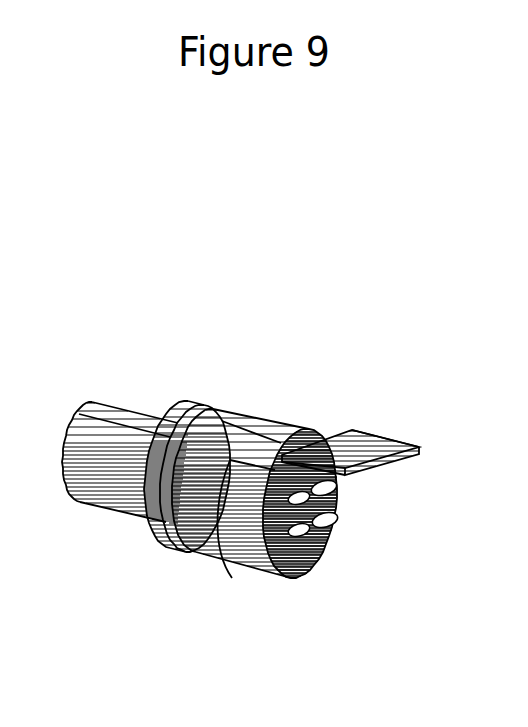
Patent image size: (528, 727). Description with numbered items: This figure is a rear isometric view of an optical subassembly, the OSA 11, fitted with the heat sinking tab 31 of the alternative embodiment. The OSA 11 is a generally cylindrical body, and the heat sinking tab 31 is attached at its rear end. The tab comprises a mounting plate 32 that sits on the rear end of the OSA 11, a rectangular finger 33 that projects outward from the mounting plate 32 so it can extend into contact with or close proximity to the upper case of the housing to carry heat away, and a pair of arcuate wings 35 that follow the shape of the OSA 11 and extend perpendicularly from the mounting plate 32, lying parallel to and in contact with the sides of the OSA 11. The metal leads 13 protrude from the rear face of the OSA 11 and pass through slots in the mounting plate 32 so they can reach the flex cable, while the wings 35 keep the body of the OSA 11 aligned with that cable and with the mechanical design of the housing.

The OSA 11 is at (172, 418).
The metal leads 13 is at (333, 518).
The heat sinking tab 31 is at (405, 426).
The mounting plate 32 is at (360, 478).
The rectangular finger 33 is at (367, 434).
The arcuate wings 35 is at (232, 568).